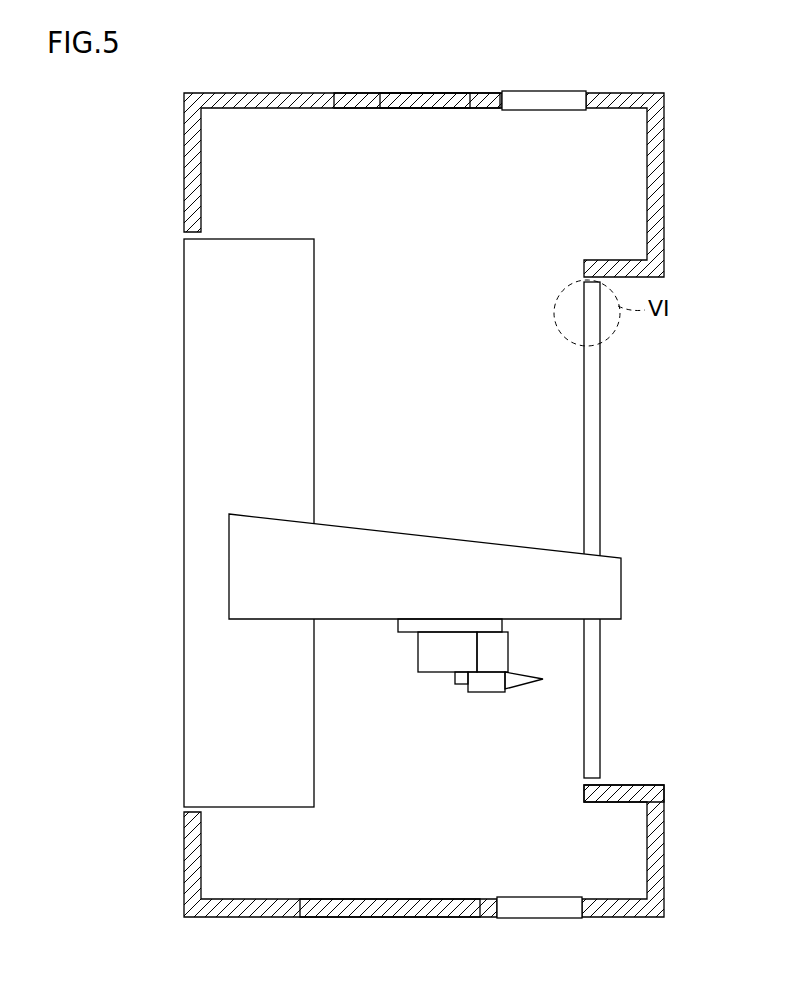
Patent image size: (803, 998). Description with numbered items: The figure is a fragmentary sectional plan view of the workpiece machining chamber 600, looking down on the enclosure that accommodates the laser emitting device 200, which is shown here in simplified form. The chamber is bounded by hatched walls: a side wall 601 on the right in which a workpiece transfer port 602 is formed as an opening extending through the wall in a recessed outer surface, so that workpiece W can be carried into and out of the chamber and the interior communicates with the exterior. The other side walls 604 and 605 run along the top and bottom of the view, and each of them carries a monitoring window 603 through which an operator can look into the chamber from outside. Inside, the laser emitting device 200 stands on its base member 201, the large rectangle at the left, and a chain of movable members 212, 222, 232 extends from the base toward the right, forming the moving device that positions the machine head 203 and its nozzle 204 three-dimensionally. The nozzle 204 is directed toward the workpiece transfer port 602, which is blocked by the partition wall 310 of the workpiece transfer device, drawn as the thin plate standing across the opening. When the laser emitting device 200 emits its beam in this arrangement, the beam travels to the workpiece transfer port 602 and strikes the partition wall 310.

The laser emitting device 200 is at (184, 321).
The base member 201 is at (200, 465).
The movable member 212 is at (605, 589).
The movable member 222 is at (492, 626).
The movable member 232 is at (457, 643).
The machine head 203 is at (495, 656).
The nozzle 204 is at (523, 681).
The partition wall 310 is at (592, 447).
The workpiece machining chamber 600 is at (334, 102).
The side wall 601 is at (660, 845).
The workpiece transfer port 602 is at (592, 782).
The monitoring window 603 is at (529, 100).
The side wall 604 is at (417, 100).
The side wall 605 is at (380, 905).